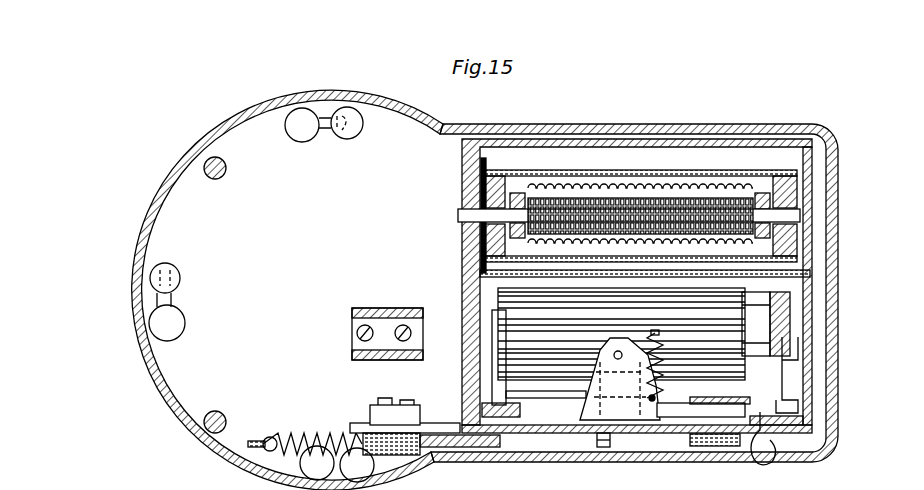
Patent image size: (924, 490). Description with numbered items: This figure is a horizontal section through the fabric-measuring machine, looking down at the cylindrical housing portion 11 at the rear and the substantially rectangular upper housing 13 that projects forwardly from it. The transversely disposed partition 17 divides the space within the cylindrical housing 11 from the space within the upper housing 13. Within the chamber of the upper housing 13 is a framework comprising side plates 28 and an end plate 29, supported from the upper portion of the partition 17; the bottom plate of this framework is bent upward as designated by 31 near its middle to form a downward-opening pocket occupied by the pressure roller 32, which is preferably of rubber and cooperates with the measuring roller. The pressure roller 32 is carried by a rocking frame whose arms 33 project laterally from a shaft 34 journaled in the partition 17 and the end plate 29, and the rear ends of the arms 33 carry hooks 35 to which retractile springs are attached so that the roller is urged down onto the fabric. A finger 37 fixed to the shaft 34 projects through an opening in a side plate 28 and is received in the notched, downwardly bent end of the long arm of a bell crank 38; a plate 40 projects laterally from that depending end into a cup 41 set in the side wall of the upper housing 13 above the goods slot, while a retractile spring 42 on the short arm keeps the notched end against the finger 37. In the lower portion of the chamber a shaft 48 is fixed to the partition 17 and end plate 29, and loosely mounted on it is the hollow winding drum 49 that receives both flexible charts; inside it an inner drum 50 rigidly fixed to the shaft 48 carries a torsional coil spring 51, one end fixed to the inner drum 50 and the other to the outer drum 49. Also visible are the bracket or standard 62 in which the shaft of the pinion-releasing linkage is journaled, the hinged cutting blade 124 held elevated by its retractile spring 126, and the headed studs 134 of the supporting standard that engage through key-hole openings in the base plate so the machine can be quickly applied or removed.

The cylindrical housing portion 11 is at (138, 240).
The upper housing 13 is at (838, 180).
The partition 17 is at (461, 266).
The side plates 28 is at (537, 437).
The end plate 29 is at (814, 290).
The upwardly bent portion of bottom plate 31 is at (600, 280).
The pressure roller 32 is at (621, 334).
The arms 33 is at (500, 340).
The shaft 34 is at (565, 386).
The hooks 35 is at (806, 407).
The finger 37 is at (603, 437).
The bell crank 38 is at (632, 342).
The plate 40 is at (718, 432).
The cup 41 is at (765, 428).
The retractile spring 42 is at (660, 350).
The shaft 48 is at (458, 213).
The winding drum 49 is at (737, 170).
The inner drum 50 is at (670, 200).
The torsional coil spring 51 is at (630, 194).
The bracket or standard 62 is at (350, 320).
The blade 124 is at (360, 424).
The retractile spring 126 is at (300, 430).
The headed studs 134 is at (334, 136).